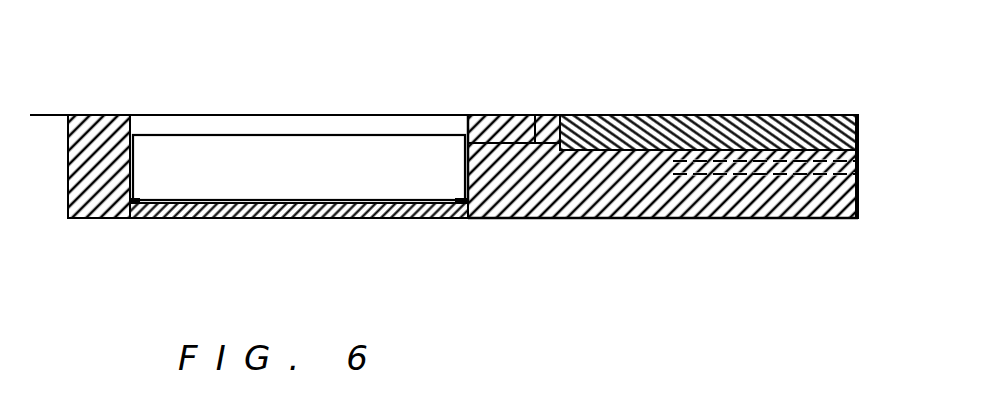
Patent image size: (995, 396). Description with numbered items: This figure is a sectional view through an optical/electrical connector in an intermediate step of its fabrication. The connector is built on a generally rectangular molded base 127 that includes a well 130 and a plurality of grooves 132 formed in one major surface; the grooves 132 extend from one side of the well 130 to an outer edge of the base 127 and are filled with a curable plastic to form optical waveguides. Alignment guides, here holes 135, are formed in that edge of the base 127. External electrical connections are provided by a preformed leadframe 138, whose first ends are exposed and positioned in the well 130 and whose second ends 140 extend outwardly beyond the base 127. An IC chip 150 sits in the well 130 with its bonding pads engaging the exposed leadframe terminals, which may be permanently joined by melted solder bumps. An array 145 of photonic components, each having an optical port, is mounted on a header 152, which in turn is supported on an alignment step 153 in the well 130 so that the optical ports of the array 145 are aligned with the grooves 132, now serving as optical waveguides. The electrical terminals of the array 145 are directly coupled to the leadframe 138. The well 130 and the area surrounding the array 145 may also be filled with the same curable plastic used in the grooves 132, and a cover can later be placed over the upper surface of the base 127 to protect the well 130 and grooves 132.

The second ends 140 is at (90, 115).
The well 130 is at (226, 125).
The leadframe 138 is at (200, 218).
The IC chip 150 is at (348, 183).
The header 152 is at (502, 125).
The array of photonic components 145 is at (560, 123).
The grooves 132 is at (712, 125).
The alignment step 153 is at (497, 165).
The base 127 is at (673, 210).
The holes 135 is at (858, 170).